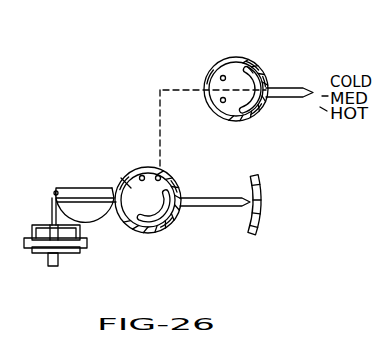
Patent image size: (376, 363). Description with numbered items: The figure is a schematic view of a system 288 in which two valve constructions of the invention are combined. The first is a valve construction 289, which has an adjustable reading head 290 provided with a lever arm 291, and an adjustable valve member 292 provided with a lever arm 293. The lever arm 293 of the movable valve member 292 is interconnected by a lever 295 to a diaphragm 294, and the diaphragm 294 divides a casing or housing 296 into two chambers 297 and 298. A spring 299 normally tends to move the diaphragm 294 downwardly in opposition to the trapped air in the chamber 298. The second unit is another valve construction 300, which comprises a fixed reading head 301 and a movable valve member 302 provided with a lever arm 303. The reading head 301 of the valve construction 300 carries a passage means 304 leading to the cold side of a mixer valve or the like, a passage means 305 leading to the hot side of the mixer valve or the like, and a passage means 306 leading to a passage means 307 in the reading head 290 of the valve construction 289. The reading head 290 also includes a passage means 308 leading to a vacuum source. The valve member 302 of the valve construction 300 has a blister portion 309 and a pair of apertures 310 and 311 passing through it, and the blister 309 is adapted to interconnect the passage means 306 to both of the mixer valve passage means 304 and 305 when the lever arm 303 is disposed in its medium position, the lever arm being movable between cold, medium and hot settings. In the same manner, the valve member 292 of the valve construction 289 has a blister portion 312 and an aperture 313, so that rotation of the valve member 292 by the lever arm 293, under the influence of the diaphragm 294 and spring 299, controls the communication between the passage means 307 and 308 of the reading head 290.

The system 288 is at (168, 40).
The valve construction 289 is at (122, 134).
The adjustable reading head 290 is at (168, 178).
The lever arm 291 is at (203, 207).
The adjustable valve member 292 is at (128, 180).
The lever arm 293 is at (105, 188).
The diaphragm 294 is at (62, 250).
The lever 295 is at (58, 206).
The casing or housing 296 is at (85, 241).
The chamber 297 is at (47, 224).
The chamber 298 is at (47, 254).
The spring 299 is at (78, 231).
The valve construction 300 is at (286, 66).
The fixed reading head 301 is at (207, 75).
The movable valve member 302 is at (259, 112).
The lever arm 303 is at (292, 97).
The passage means 304 is at (248, 60).
The passage means 305 is at (242, 113).
The passage means 306 is at (261, 84).
The passage means 307 is at (178, 188).
The passage means 308 is at (152, 226).
The blister portion 309 is at (254, 70).
The aperture 310 is at (223, 75).
The aperture 311 is at (223, 103).
The blister portion 312 is at (173, 220).
The aperture 313 is at (142, 175).